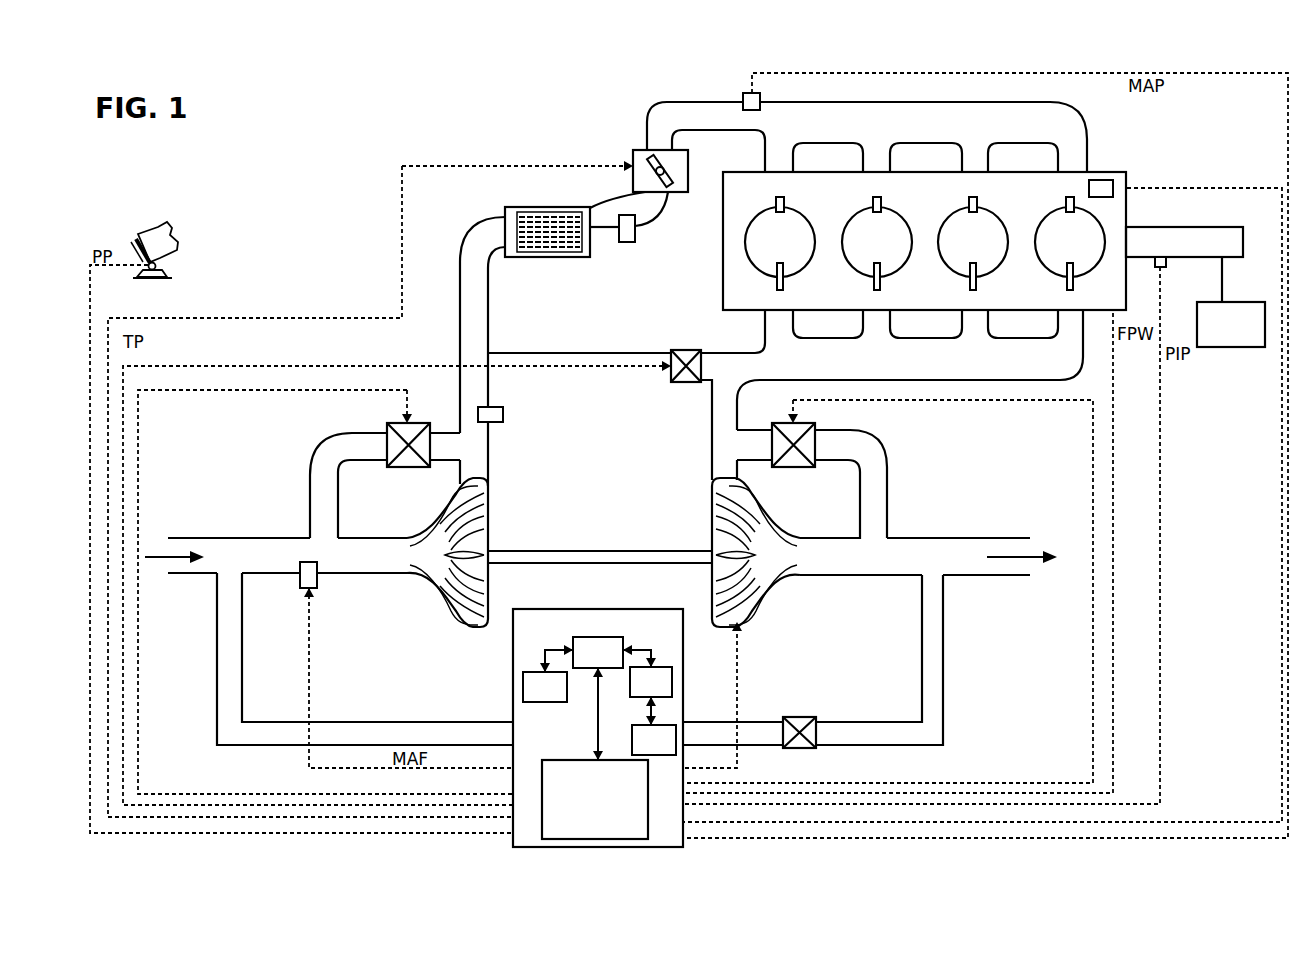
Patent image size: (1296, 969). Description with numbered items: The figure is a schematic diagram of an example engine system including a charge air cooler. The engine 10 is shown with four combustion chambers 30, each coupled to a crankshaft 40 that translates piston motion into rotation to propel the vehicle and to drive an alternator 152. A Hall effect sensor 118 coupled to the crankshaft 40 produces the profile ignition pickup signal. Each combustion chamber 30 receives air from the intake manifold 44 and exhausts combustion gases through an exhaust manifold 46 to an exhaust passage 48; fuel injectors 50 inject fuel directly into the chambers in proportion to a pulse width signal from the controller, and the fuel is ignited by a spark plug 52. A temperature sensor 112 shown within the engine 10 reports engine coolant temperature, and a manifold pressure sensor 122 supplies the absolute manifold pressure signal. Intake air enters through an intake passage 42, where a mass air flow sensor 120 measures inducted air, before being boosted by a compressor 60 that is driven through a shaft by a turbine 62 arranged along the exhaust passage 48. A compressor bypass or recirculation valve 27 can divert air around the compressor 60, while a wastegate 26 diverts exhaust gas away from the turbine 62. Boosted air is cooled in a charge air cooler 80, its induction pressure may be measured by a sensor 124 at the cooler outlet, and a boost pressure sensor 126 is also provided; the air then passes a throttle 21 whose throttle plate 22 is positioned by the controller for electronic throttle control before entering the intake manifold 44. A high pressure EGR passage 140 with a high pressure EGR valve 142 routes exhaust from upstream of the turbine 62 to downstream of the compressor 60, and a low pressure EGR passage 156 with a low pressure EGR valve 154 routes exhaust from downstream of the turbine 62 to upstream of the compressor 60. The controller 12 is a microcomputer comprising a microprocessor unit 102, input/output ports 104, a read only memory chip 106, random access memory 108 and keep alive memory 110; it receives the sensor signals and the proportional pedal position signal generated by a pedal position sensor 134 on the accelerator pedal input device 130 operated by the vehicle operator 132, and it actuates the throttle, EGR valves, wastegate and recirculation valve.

The engine 10 is at (1025, 199).
The controller 12 is at (560, 740).
The throttle 21 is at (643, 149).
The throttle plate 22 is at (672, 187).
The wastegate 26 is at (815, 432).
The compressor bypass or recirculation valve (CRV) 27 is at (387, 430).
The combustion chamber 30 is at (791, 252).
The crankshaft 40 is at (1145, 227).
The intake passage 42 is at (230, 566).
The intake manifold 44 is at (814, 131).
The exhaust manifold 46 is at (937, 371).
The exhaust passage 48 is at (735, 418).
The fuel injector 50 is at (777, 286).
The spark plug 52 is at (784, 201).
The compressor 60 is at (452, 597).
The turbine 62 is at (748, 514).
The charge air cooler (CAC) 80 is at (512, 207).
The microprocessor unit 102 is at (572, 643).
The input/output ports 104 is at (640, 836).
The read only memory chip 106 is at (523, 696).
The random access memory 108 is at (672, 670).
The keep alive memory 110 is at (675, 726).
The temperature sensor 112 is at (1103, 179).
The Hall effect sensor 118 is at (1157, 268).
The MAF sensor 120 is at (318, 584).
The manifold pressure sensor 122 is at (762, 94).
The temperature and/or pressure sensor 124 is at (632, 243).
The boost pressure sensor 126 is at (502, 421).
The input device 130 is at (135, 245).
The vehicle operator 132 is at (176, 233).
The pedal position sensor 134 is at (160, 267).
The high pressure EGR passage 140 is at (580, 353).
The high pressure EGR valve 142 is at (688, 350).
The alternator 152 is at (1247, 336).
The low pressure EGR valve 154 is at (797, 716).
The low pressure EGR passage 156 is at (947, 722).